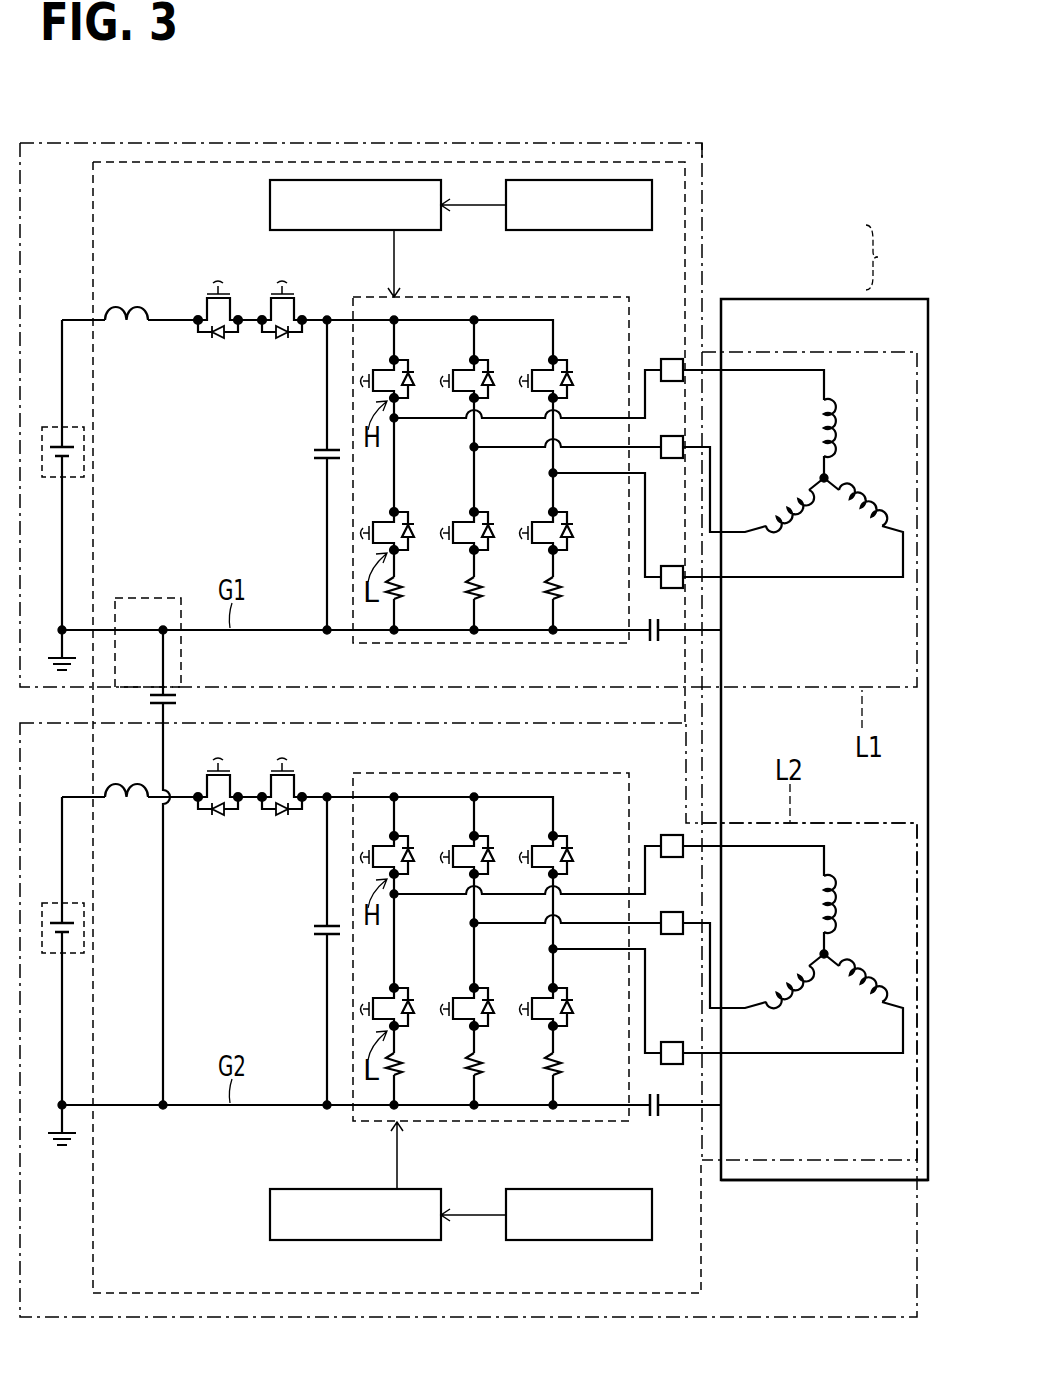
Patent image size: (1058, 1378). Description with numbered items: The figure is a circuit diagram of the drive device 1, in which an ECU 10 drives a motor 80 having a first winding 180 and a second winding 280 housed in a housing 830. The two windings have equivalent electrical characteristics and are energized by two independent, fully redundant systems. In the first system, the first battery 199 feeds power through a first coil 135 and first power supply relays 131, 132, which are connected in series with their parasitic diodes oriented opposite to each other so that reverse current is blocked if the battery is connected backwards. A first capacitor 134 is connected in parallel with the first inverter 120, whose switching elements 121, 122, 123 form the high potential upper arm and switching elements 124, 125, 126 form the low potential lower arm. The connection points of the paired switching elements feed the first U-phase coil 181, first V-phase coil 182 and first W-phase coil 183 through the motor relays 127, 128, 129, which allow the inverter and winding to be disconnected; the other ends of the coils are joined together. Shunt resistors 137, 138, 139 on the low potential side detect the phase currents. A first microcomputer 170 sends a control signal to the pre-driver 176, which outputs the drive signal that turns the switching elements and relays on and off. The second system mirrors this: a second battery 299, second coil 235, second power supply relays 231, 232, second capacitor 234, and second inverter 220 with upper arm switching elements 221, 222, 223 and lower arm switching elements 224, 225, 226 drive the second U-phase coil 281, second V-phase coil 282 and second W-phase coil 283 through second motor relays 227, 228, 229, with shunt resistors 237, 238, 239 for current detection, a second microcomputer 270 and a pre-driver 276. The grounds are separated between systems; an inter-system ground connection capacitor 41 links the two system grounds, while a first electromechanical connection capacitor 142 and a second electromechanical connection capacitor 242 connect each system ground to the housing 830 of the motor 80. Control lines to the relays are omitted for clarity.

The drive device 1 is at (879, 257).
The ECU 10 is at (705, 250).
The motor 80 is at (814, 292).
The housing 830 is at (763, 1182).
The inter-system ground connection capacitor 41 is at (160, 692).
The first inverter 120 is at (458, 297).
The U-phase switching element 121 is at (400, 357).
The V-phase switching element 122 is at (480, 357).
The W-phase switching element 123 is at (559, 357).
The U-phase switching element 124 is at (400, 511).
The V-phase switching element 125 is at (480, 511).
The W-phase switching element 126 is at (559, 511).
The U-phase motor relay 127 is at (670, 358).
The V-phase motor relay 128 is at (672, 436).
The W-phase motor relay 129 is at (672, 566).
The first power supply relay 131 is at (200, 334).
The first power supply relay 132 is at (268, 334).
The first capacitor 134 is at (320, 462).
The first coil 135 is at (135, 336).
The shunt resistor 137 is at (403, 578).
The shunt resistor 138 is at (483, 578).
The shunt resistor 139 is at (562, 578).
The first electromechanical connection capacitor 142 is at (648, 642).
The first microcomputer 170 is at (637, 232).
The pre-driver 176 is at (295, 232).
The first winding 180 is at (800, 426).
The first U-phase coil 181 is at (826, 404).
The first V-phase coil 182 is at (773, 490).
The first W-phase coil 183 is at (868, 490).
The first battery 199 is at (53, 478).
The second inverter 220 is at (520, 773).
The second switching element 221 is at (400, 833).
The second switching element 222 is at (480, 833).
The second switching element 223 is at (559, 833).
The second switching element 224 is at (400, 987).
The second switching element 225 is at (480, 987).
The second switching element 226 is at (559, 987).
The second motor relay 227 is at (670, 834).
The second motor relay 228 is at (672, 912).
The second motor relay 229 is at (672, 1042).
The second power supply relay 231 is at (200, 810).
The second power supply relay 232 is at (268, 810).
The second capacitor 234 is at (320, 938).
The second coil 235 is at (135, 812).
The shunt resistor 237 is at (403, 1054).
The shunt resistor 238 is at (483, 1054).
The shunt resistor 239 is at (562, 1054).
The second electromechanical connection capacitor 242 is at (648, 1120).
The second microcomputer 270 is at (637, 1241).
The pre-driver 276 is at (295, 1241).
The second winding 280 is at (800, 902).
The second U-phase coil 281 is at (826, 880).
The second V-phase coil 282 is at (773, 966).
The second W-phase coil 283 is at (868, 966).
The second battery 299 is at (53, 954).